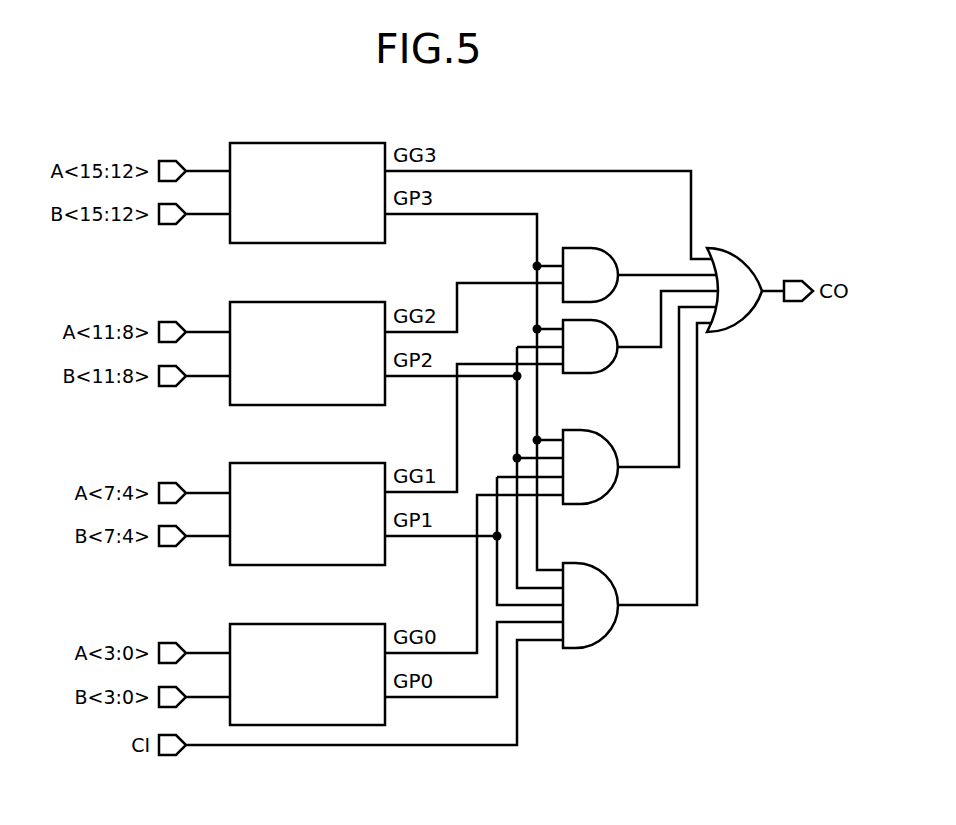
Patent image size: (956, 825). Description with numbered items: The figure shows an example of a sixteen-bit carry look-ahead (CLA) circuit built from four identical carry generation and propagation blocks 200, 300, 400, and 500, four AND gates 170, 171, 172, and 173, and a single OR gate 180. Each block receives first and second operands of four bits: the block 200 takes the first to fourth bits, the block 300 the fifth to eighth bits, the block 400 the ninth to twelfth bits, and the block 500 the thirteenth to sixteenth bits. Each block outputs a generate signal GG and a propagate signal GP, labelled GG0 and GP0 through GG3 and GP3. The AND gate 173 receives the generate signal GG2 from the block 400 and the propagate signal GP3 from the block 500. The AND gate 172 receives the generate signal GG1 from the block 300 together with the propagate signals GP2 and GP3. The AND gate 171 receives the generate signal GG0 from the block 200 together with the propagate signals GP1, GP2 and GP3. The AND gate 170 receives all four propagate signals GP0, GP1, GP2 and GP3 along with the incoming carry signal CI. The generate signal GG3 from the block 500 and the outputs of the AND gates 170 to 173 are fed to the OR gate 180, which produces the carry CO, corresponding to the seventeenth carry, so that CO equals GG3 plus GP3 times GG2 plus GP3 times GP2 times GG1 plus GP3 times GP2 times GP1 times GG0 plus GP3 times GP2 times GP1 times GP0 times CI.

The carry generation and propagation block 500 is at (340, 143).
The carry generation and propagation block 400 is at (342, 302).
The carry generation and propagation block 300 is at (342, 463).
The carry generation and propagation block 200 is at (342, 624).
The AND gate 173 is at (608, 255).
The AND gate 172 is at (608, 325).
The AND gate 171 is at (586, 430).
The AND gate 170 is at (586, 562).
The OR gate 180 is at (747, 267).